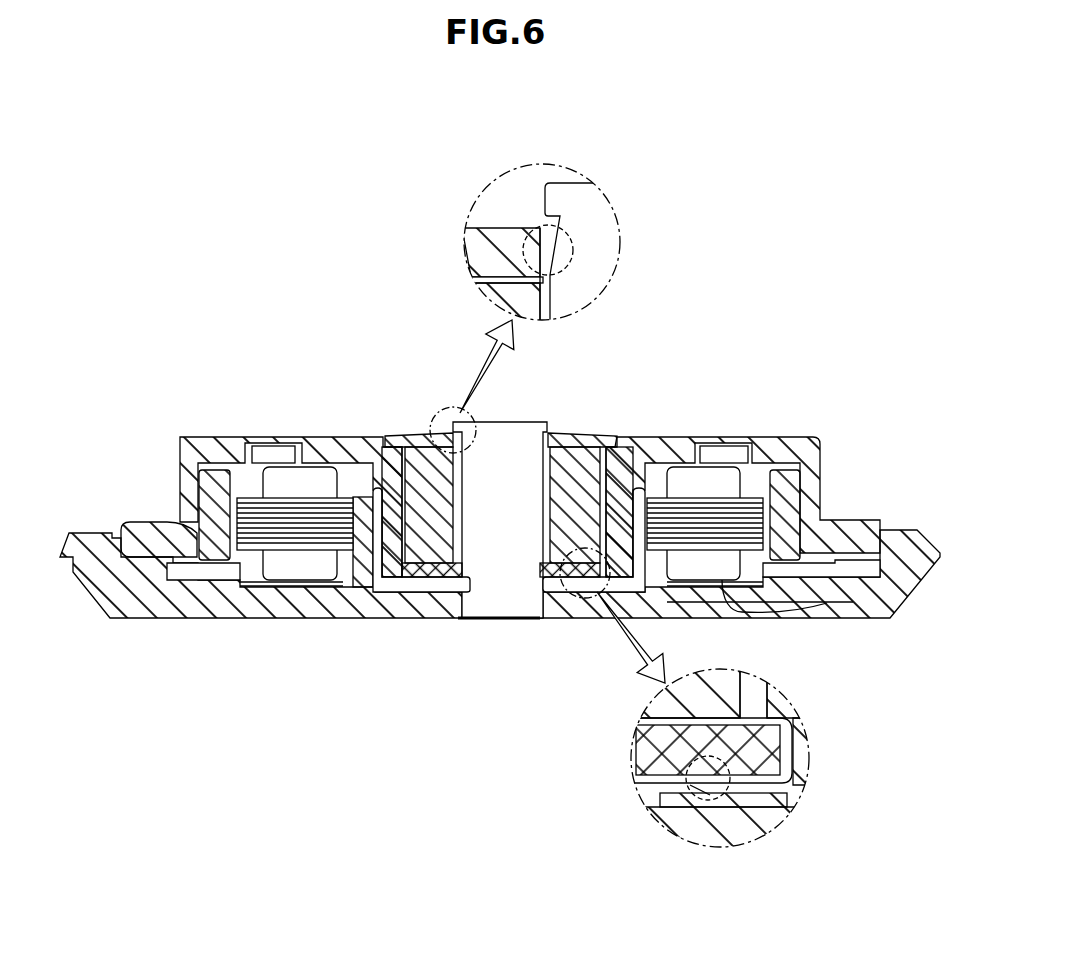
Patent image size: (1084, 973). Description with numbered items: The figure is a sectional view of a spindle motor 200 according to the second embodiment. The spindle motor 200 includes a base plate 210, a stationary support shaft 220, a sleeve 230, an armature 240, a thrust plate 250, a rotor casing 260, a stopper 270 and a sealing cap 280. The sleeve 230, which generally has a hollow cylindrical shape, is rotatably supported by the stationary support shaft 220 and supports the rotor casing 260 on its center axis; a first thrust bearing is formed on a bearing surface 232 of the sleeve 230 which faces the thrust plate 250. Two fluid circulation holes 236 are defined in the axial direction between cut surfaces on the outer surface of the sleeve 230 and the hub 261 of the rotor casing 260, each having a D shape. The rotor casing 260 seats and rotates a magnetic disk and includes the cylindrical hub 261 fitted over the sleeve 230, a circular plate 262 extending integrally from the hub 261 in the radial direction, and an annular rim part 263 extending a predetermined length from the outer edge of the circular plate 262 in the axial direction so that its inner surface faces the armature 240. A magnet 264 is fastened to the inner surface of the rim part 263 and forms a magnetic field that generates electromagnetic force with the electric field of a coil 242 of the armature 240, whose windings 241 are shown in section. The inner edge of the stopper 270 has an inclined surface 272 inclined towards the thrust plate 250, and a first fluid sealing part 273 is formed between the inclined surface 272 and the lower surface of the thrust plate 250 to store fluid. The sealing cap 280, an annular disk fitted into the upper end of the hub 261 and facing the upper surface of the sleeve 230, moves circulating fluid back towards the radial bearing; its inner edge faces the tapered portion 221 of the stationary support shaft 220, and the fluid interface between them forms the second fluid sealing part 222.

The spindle motor 200 is at (212, 329).
The base plate 210 is at (155, 630).
The stationary support shaft 220 is at (500, 610).
The tapered portion 221 is at (547, 237).
The second fluid sealing part 222 is at (533, 228).
The sleeve 230 is at (410, 458).
The bearing surface 232 is at (730, 704).
The fluid circulation holes 236 is at (388, 445).
The armature 240 is at (298, 718).
The coil 241 is at (255, 540).
The coil 242 is at (300, 570).
The thrust plate 250 is at (431, 586).
The rotor casing 260 is at (858, 347).
The hub 261 is at (641, 443).
The circular plate 262 is at (680, 445).
The rim part 263 is at (832, 445).
The magnet 264 is at (763, 445).
The stopper 270 is at (770, 805).
The inclined surface 272 is at (655, 780).
The first fluid sealing part 273 is at (712, 792).
The sealing cap 280 is at (420, 428).